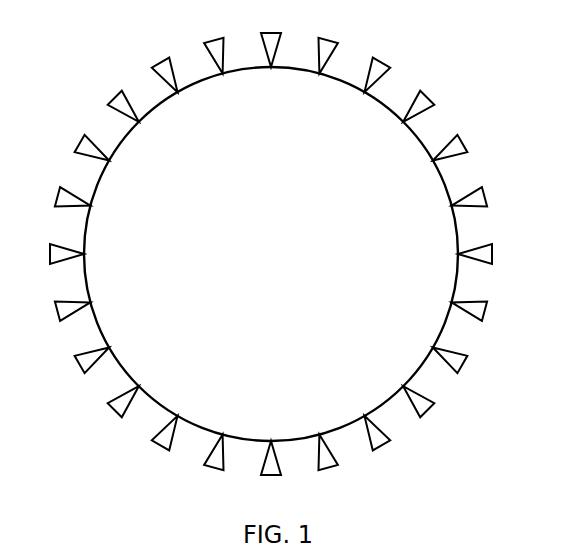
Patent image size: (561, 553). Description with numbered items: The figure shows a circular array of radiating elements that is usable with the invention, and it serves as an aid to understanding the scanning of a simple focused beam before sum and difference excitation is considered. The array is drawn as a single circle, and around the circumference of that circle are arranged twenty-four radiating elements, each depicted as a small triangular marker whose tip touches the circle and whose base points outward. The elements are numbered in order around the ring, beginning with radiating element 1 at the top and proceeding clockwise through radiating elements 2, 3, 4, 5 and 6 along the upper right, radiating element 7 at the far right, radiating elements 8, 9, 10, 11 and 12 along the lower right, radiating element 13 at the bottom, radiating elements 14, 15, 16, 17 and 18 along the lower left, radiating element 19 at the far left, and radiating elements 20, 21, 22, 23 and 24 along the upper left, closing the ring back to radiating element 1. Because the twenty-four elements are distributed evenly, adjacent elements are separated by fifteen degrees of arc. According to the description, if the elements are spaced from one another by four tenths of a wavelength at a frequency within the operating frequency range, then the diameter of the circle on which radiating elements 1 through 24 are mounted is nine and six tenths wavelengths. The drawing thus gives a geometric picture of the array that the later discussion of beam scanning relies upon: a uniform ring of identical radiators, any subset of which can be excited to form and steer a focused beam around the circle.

The radiating element 1 is at (271, 37).
The radiating element 2 is at (328, 43).
The radiating element 3 is at (381, 65).
The radiating element 4 is at (425, 100).
The radiating element 5 is at (460, 146).
The radiating element 6 is at (478, 201).
The radiating element 7 is at (485, 255).
The radiating element 8 is at (478, 310).
The radiating element 9 is at (458, 364).
The radiating element 10 is at (427, 408).
The radiating element 11 is at (383, 444).
The radiating element 12 is at (331, 465).
The radiating element 13 is at (270, 472).
The radiating element 14 is at (209, 464).
The radiating element 15 is at (158, 443).
The radiating element 16 is at (113, 408).
The radiating element 17 is at (79, 363).
The radiating element 18 is at (58, 310).
The radiating element 19 is at (51, 254).
The radiating element 20 is at (58, 200).
The radiating element 21 is at (79, 148).
The radiating element 22 is at (113, 101).
The radiating element 23 is at (158, 65).
The radiating element 24 is at (210, 42).